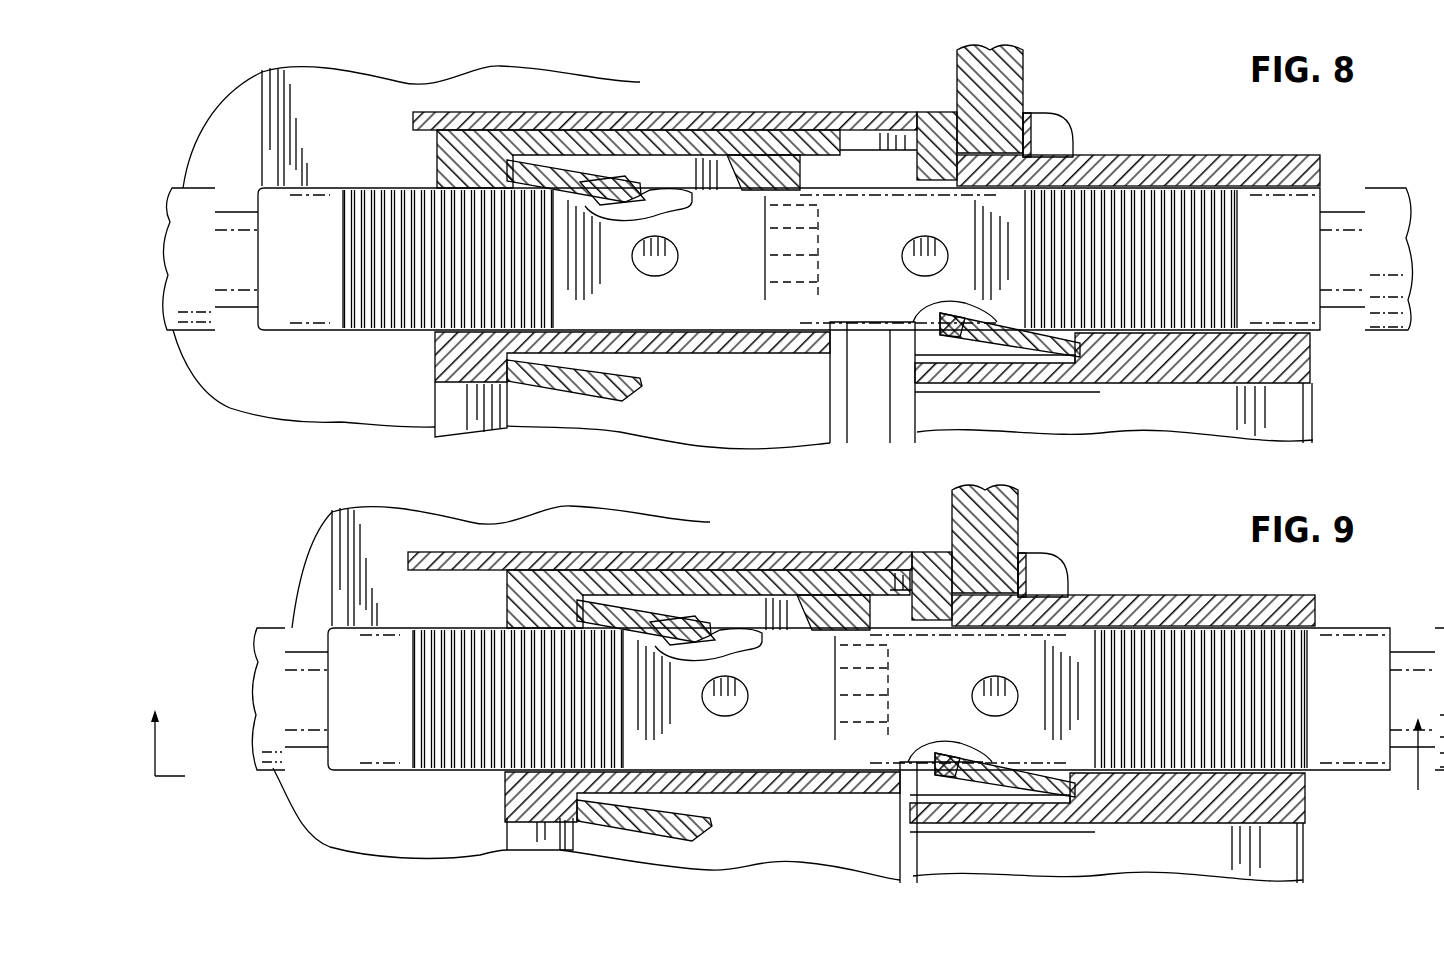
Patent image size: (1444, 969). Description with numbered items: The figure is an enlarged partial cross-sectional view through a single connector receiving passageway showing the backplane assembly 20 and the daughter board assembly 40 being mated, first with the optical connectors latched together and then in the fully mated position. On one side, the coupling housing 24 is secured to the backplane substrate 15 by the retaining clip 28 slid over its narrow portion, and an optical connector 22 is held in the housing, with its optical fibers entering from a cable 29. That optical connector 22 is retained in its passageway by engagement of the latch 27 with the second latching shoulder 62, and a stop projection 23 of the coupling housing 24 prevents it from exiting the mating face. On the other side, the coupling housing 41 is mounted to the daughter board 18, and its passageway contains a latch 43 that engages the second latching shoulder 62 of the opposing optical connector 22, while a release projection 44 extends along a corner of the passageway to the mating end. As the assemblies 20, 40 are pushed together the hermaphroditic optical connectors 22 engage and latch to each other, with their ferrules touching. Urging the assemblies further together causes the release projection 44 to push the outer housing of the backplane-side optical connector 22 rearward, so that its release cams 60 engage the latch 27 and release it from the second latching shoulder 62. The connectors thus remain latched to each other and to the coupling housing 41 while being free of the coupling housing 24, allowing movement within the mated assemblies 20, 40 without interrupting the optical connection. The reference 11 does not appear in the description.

In FIG. 9, the axis direction line 11 is at (792, 762).
In FIG. 8, the backplane substrate 15 is at (1020, 62).
In FIG. 9, the backplane substrate 15 is at (1000, 520).
In FIG. 8, the daughter board 18 is at (285, 417).
In FIG. 9, the daughter board 18 is at (370, 515).
In FIG. 8, the backplane assembly 20 is at (1163, 152).
In FIG. 9, the backplane assembly 20 is at (1137, 594).
In FIG. 8, the optical connector 22 is at (262, 187).
In FIG. 9, the optical connector 22 is at (332, 627).
In FIG. 8, the stop projection 23 is at (1020, 336).
In FIG. 9, the stop projection 23 is at (1072, 795).
In FIG. 8, the coupling housing 24 is at (917, 115).
In FIG. 9, the coupling housing 24 is at (845, 553).
In FIG. 8, the latch 27 is at (1005, 356).
In FIG. 9, the latch 27 is at (955, 800).
In FIG. 8, the retaining clip 28 is at (1068, 122).
In FIG. 9, the retaining clip 28 is at (1060, 562).
In FIG. 8, the cable 29 is at (178, 330).
In FIG. 9, the cable 29 is at (268, 765).
In FIG. 8, the daughter board assembly 40 is at (490, 62).
In FIG. 9, the daughter board assembly 40 is at (455, 506).
In FIG. 8, the coupling housing 41 is at (437, 160).
In FIG. 9, the coupling housing 41 is at (518, 600).
In FIG. 8, the latch 43 is at (583, 160).
In FIG. 9, the latch 43 is at (645, 600).
In FIG. 8, the release projection 44 is at (795, 150).
In FIG. 9, the release projection 44 is at (865, 582).
In FIG. 8, the release cams 60 is at (680, 193).
In FIG. 9, the release cams 60 is at (750, 633).
In FIG. 8, the second latching shoulder 62 is at (633, 197).
In FIG. 9, the second latching shoulder 62 is at (703, 637).